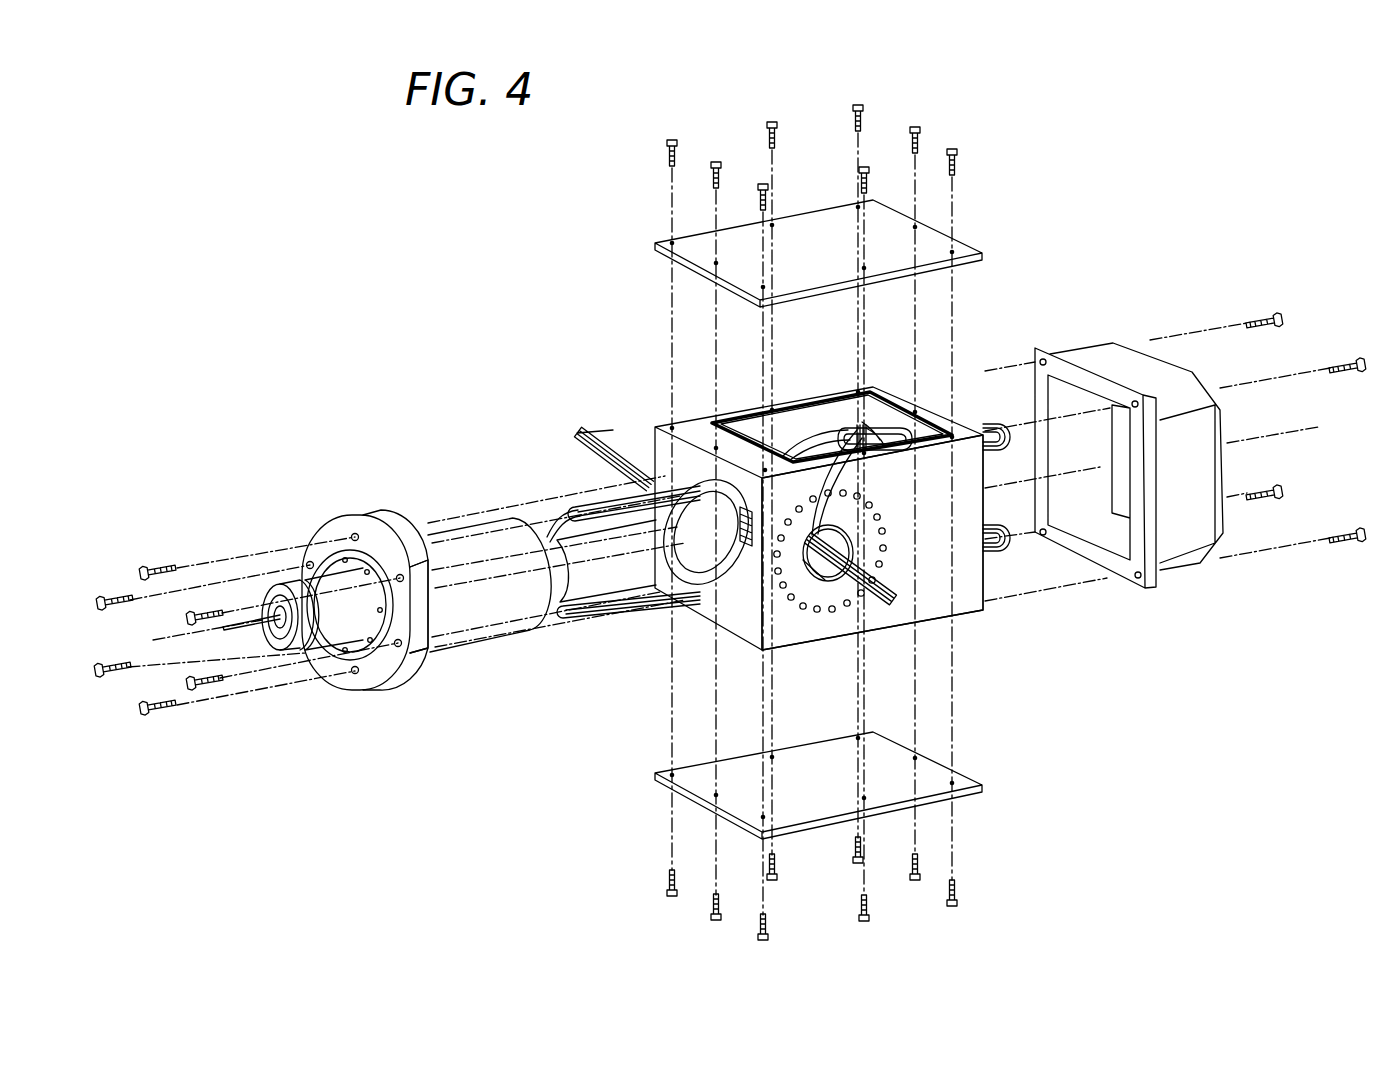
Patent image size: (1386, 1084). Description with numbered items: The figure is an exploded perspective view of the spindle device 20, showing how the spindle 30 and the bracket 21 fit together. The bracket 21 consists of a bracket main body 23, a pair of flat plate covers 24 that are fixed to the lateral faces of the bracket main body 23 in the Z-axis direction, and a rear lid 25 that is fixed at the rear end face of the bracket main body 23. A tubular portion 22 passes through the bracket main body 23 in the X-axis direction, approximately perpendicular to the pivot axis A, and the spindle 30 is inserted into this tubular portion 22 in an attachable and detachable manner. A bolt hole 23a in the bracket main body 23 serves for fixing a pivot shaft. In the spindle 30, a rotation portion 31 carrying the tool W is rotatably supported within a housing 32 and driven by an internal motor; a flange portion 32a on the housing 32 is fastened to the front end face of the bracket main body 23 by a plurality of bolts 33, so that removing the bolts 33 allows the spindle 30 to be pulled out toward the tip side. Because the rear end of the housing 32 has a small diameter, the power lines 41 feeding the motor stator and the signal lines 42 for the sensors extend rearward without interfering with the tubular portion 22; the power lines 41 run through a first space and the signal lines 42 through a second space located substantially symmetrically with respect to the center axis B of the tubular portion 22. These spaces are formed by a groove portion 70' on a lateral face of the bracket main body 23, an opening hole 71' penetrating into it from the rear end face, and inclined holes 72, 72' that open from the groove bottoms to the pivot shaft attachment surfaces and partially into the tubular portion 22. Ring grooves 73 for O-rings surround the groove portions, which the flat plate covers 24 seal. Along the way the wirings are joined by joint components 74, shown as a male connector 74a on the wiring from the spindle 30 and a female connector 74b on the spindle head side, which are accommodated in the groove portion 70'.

The spindle device 20 is at (1030, 162).
The bracket 21 is at (1017, 326).
The tubular portion 22 is at (740, 577).
The bracket main body 23 is at (983, 613).
The bolt hole 23a is at (962, 598).
The flat plate covers 24 is at (810, 238).
The rear lid 25 is at (1118, 360).
The spindle 30 is at (389, 510).
The rotation portion 31 is at (288, 650).
The housing 32 is at (463, 530).
The flange portion 32a is at (405, 672).
The bolts 33 is at (157, 567).
The power lines 41 is at (613, 618).
The signal lines 42 is at (587, 506).
The groove portion 70' is at (942, 371).
The opening hole 71' is at (960, 434).
The inclined hole 72 is at (713, 448).
The inclined hole 72' is at (817, 611).
The ring grooves 73 is at (748, 412).
The joint components 74 is at (861, 418).
The male connector 74a is at (888, 418).
The female connector 74b is at (838, 428).
The pivot axis A is at (952, 577).
The center axis B is at (1305, 428).
The tool W is at (252, 617).